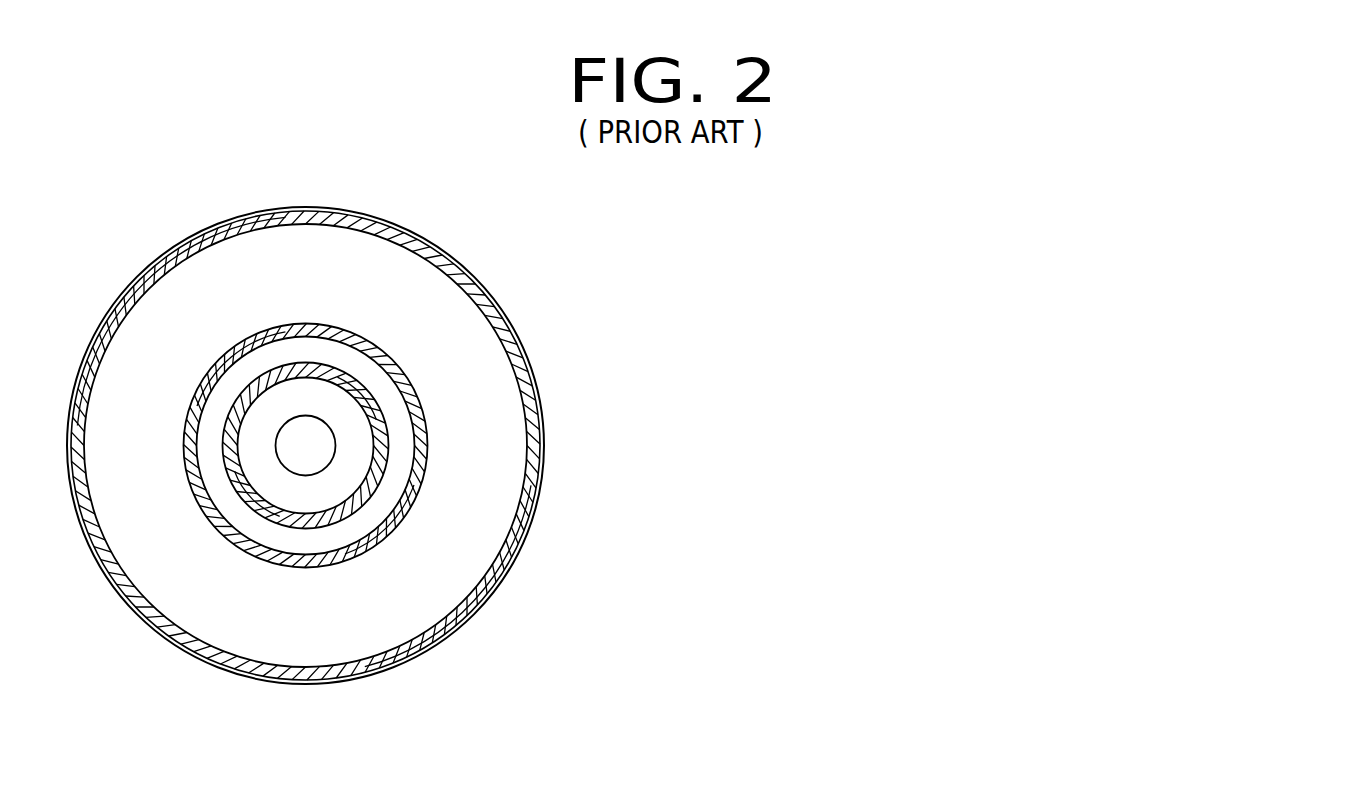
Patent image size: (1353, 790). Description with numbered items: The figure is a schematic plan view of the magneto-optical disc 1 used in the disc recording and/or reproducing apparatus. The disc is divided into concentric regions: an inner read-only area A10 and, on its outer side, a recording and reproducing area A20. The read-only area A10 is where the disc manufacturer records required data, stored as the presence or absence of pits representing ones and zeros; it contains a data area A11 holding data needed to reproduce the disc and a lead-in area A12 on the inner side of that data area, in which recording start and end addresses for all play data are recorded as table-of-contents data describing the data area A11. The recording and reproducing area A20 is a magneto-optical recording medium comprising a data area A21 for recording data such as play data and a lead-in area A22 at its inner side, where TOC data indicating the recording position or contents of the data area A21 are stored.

The magneto-optical disc 1 is at (522, 560).
The read-only area A10 is at (809, 387).
The data area A11 is at (380, 383).
The lead-in area A12 is at (348, 380).
The recording and reproducing area A20 is at (680, 445).
The data area A21 is at (490, 472).
The lead-in area A22 is at (428, 420).